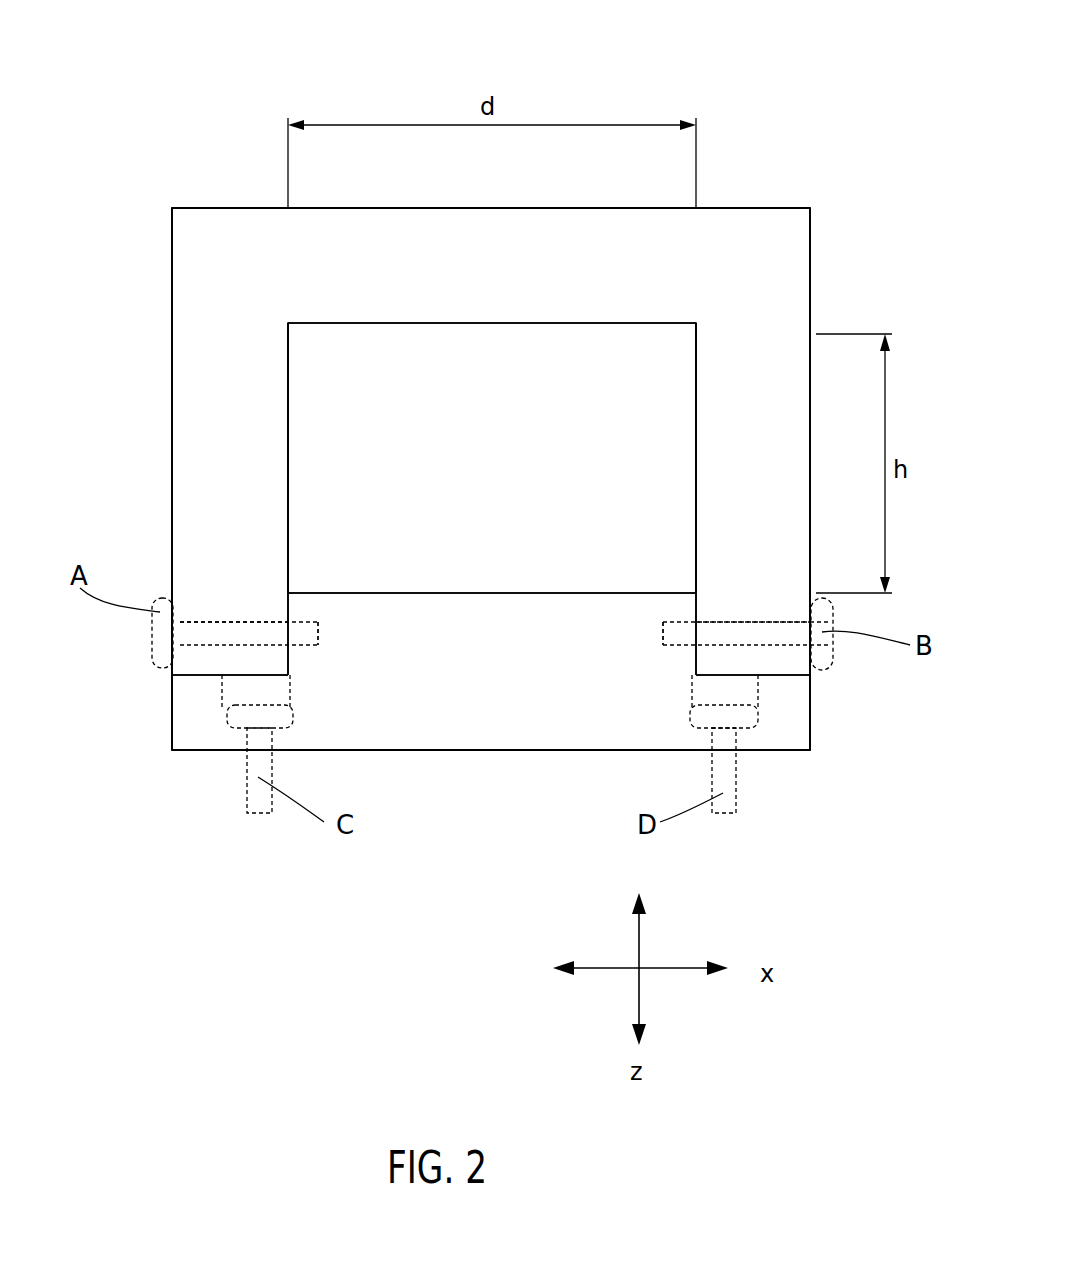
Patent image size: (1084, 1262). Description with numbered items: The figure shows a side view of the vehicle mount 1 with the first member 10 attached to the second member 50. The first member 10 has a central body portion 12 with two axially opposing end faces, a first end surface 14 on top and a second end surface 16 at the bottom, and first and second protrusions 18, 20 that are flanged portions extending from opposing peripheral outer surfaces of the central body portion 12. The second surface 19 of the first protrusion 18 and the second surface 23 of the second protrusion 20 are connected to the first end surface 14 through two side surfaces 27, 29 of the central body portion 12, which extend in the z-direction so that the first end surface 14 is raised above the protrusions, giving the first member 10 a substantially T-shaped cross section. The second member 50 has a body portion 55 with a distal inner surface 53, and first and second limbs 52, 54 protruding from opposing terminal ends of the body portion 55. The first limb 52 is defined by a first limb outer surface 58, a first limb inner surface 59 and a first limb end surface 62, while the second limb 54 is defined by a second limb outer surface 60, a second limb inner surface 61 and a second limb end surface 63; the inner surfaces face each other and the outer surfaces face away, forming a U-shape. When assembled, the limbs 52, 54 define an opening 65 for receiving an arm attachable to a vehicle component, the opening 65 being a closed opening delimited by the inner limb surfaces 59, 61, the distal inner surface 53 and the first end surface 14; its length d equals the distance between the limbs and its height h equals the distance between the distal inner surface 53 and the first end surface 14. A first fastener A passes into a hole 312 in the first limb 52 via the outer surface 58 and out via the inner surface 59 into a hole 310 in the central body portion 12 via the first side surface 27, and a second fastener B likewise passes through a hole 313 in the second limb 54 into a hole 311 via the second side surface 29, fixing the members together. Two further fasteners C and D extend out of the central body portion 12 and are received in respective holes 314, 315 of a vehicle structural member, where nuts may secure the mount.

The vehicle mount 1 is at (789, 140).
The first member 10 is at (548, 714).
The central body portion 12 is at (510, 683).
The first end surface 14 is at (417, 593).
The second end surface 16 is at (432, 752).
The first protrusion 18 is at (211, 716).
The second surface of first protrusion 19 is at (210, 677).
The second protrusion 20 is at (773, 727).
The second surface of second protrusion 23 is at (773, 678).
The first side surface 27 is at (287, 613).
The second side surface 29 is at (760, 622).
The second member 50 is at (335, 270).
The first limb 52 is at (205, 438).
The distal inner surface 53 is at (458, 323).
The second limb 54 is at (755, 390).
The body portion 55 is at (510, 276).
The first limb outer surface 58 is at (172, 293).
The first limb inner surface 59 is at (288, 403).
The second limb outer surface 60 is at (811, 325).
The second limb inner surface 61 is at (696, 410).
The first limb end surface 62 is at (250, 671).
The second limb end surface 63 is at (735, 675).
The opening 65 is at (510, 457).
The hole in central body portion 310 is at (313, 646).
The hole in central body portion 311 is at (668, 648).
The hole in first limb 312 is at (237, 620).
The hole in second limb 313 is at (697, 612).
The hole of structural member 314 is at (223, 712).
The hole of structural member 315 is at (760, 677).